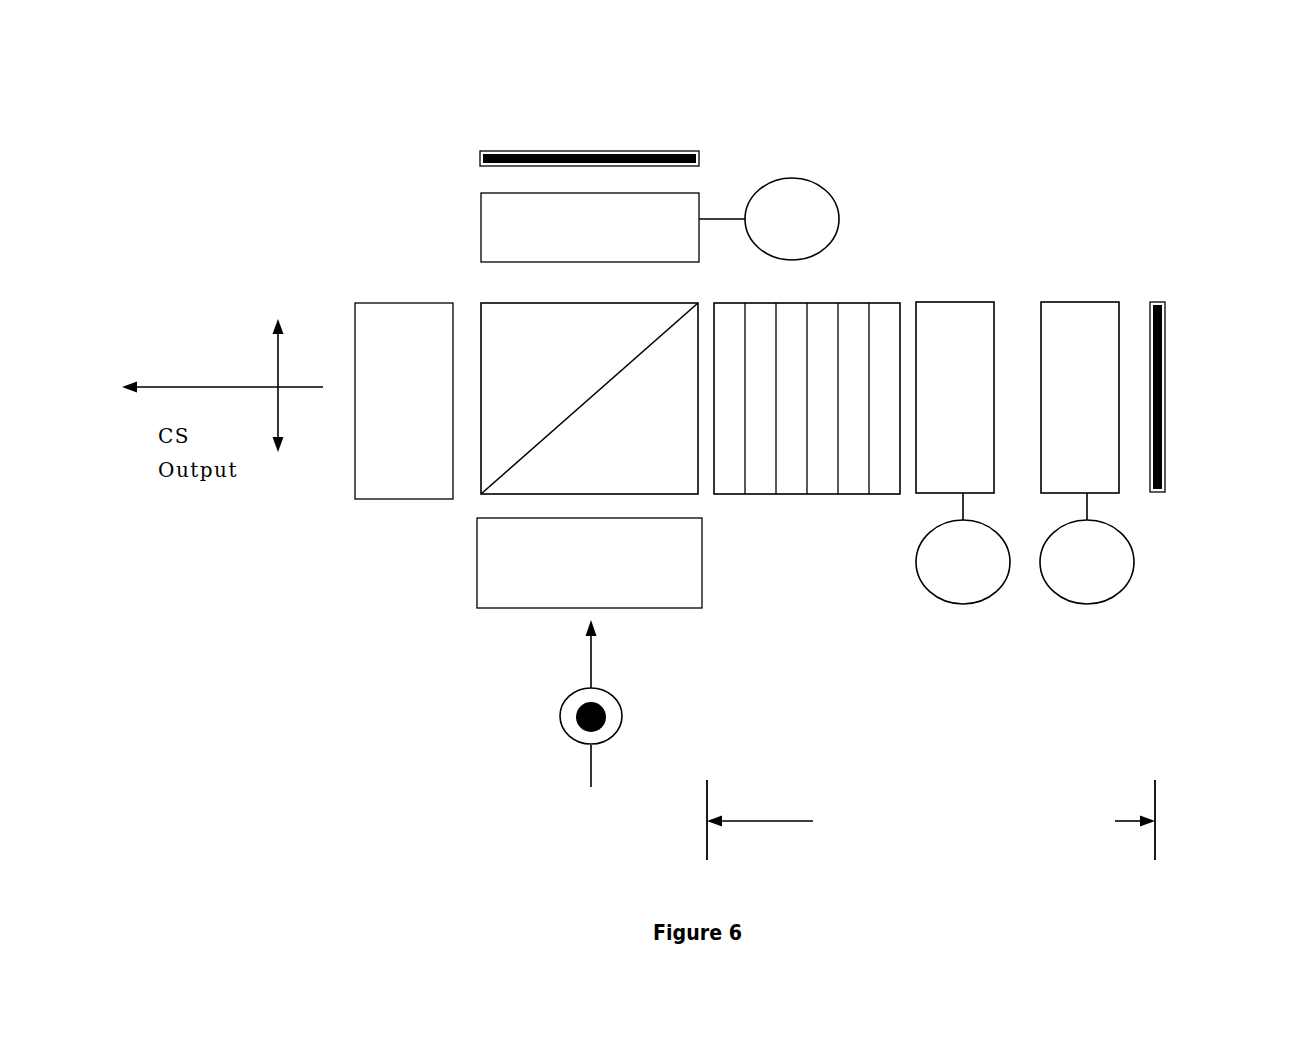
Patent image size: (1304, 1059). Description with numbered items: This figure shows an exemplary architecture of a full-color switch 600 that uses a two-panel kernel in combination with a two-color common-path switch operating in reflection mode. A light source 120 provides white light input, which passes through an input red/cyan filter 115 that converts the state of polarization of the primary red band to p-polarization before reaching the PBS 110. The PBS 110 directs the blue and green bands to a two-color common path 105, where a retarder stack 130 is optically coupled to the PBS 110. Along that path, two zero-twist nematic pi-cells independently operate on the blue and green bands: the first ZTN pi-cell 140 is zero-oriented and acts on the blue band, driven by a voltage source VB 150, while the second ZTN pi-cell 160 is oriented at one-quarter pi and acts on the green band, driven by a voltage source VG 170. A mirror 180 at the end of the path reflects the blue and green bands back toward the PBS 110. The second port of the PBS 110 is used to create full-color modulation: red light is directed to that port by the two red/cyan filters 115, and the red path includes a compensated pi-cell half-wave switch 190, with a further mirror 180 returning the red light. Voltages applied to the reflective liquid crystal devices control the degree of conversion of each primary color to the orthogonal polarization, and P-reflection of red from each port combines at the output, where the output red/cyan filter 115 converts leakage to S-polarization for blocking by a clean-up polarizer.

The full-color switch 600 is at (368, 105).
The mirror 180 is at (575, 150).
The compensated pi-cell half-wave switch 190 is at (480, 223).
The PBS 110 is at (475, 297).
The red/cyan filter 115 is at (528, 455).
The retarder stack 130 is at (840, 300).
The ZTN pi-cell 140 is at (960, 300).
The voltage source VB 150 is at (960, 605).
The ZTN pi-cell 160 is at (1053, 300).
The voltage source VG 170 is at (1097, 605).
The light source 120 is at (570, 742).
The two-color common path 105 is at (931, 820).